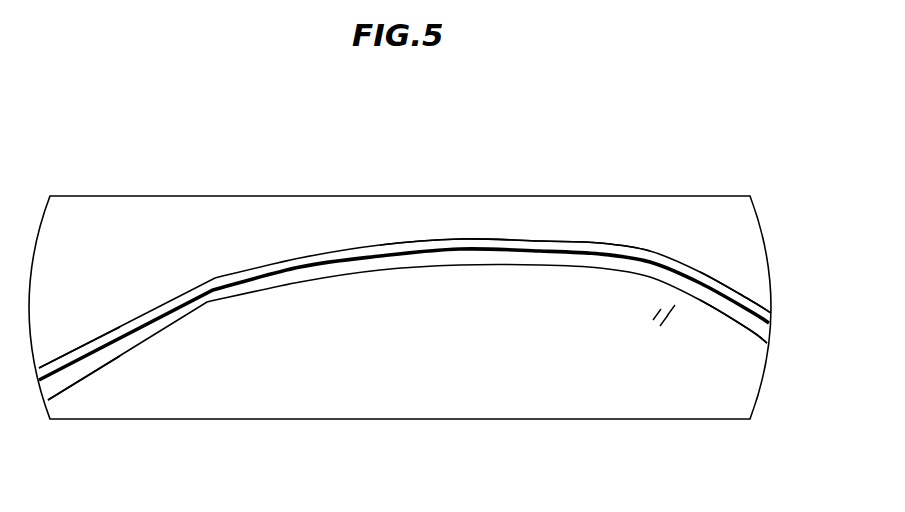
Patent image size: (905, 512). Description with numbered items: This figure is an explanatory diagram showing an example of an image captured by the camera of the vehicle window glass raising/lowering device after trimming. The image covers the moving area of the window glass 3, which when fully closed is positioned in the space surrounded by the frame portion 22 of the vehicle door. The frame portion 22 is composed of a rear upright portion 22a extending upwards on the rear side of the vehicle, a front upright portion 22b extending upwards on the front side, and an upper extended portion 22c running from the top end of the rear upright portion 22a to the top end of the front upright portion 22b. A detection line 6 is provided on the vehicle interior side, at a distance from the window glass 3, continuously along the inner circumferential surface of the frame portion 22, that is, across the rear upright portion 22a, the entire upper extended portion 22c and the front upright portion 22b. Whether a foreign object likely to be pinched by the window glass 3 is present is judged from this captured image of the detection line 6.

The window glass 3 is at (443, 419).
The detection line 6 is at (495, 240).
The frame portion 22 is at (278, 256).
The rear upright portion 22a is at (730, 283).
The front upright portion 22b is at (68, 385).
The upper extended portion 22c is at (583, 241).